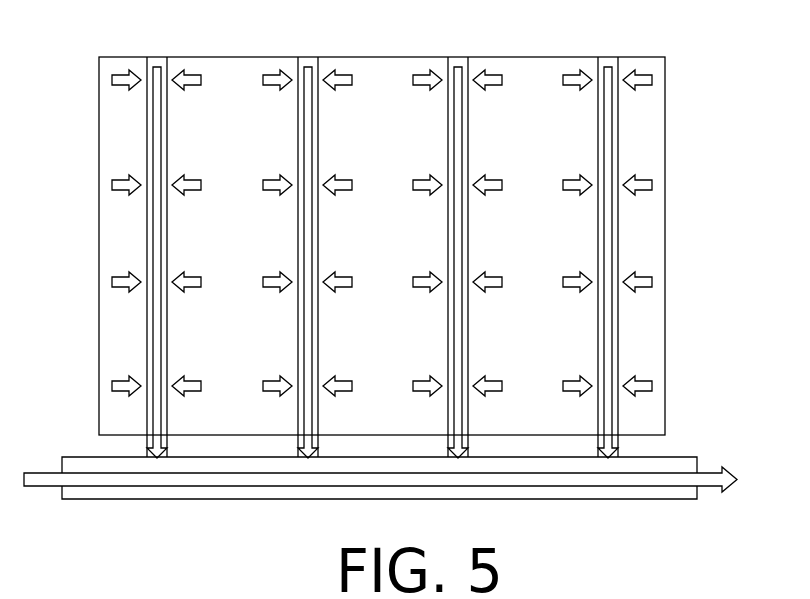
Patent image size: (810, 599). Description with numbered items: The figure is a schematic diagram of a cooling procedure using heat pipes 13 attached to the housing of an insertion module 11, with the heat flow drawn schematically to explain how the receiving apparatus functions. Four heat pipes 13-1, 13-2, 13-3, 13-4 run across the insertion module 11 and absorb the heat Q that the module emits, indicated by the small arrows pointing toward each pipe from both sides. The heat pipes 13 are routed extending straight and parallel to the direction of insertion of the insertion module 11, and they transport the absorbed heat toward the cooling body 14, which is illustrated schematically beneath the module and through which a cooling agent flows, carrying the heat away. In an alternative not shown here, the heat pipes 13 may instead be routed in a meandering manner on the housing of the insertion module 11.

The insertion module 11 is at (407, 57).
The heat pipes 13 is at (439, 257).
The heat pipe 13-1 is at (157, 240).
The heat pipe 13-2 is at (307, 241).
The heat pipe 13-3 is at (457, 240).
The heat pipe 13-4 is at (607, 240).
The cooling body 14 is at (683, 457).